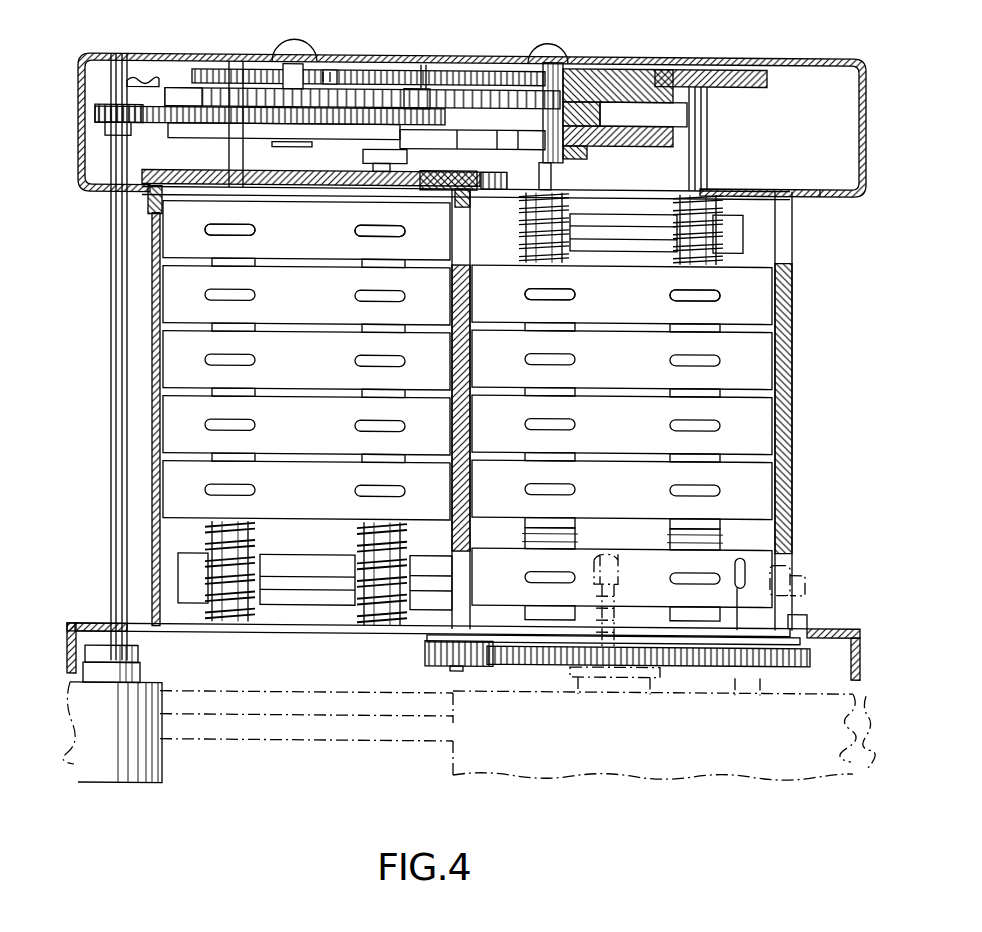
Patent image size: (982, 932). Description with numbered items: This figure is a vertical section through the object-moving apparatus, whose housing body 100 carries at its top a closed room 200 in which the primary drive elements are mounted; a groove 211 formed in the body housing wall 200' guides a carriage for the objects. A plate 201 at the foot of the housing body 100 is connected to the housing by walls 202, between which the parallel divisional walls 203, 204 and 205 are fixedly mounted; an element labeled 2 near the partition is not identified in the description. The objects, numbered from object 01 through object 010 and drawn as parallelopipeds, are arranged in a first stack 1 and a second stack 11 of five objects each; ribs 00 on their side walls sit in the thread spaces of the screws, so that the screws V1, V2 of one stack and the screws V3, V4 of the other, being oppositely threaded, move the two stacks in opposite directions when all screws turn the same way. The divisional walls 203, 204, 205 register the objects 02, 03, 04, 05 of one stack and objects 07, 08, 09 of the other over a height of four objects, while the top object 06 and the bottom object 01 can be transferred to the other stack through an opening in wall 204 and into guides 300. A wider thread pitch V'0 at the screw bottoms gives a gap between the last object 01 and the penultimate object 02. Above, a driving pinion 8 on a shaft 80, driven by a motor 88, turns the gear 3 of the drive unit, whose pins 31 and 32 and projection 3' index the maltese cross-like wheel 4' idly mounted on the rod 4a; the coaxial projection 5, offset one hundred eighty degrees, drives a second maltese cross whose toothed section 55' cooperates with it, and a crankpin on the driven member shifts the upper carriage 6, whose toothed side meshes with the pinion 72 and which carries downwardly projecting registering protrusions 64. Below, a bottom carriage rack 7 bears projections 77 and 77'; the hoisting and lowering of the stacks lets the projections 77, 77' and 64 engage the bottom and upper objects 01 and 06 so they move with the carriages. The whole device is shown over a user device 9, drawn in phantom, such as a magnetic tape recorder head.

The first stack of objects 1 is at (328, 56).
The pin 31 is at (165, 92).
The projection 3' is at (362, 64).
The gear 3 is at (368, 53).
The pin 32 is at (423, 62).
The rod 4a is at (580, 56).
The maltese cross-like wheel 4' is at (625, 88).
The driving pinion 8 is at (104, 106).
The projection 5 is at (200, 136).
The toothed section 55' is at (339, 155).
The upper carriage 6 is at (296, 150).
The pinion 72 is at (509, 178).
The groove 211 is at (612, 186).
The closed room 200 is at (472, 125).
The body housing wall 200' is at (811, 171).
The registering protrusions 64 is at (148, 203).
The divisional wall 203 is at (150, 254).
The divisional wall 204 is at (470, 302).
The divisional wall 205 is at (788, 283).
The frame 2 is at (466, 361).
The ribs 00 is at (244, 224).
The object 06 is at (448, 222).
The object 07 is at (448, 290).
The object 08 is at (448, 355).
The object 09 is at (448, 420).
The object 010 is at (448, 485).
The object 05 is at (510, 286).
The object 04 is at (510, 351).
The object 03 is at (510, 416).
The penultimate object 02 is at (510, 481).
The last object 01 is at (510, 569).
The guides 300 is at (717, 224).
The housing body 100 is at (806, 230).
The screw V3 is at (560, 250).
The screw V4 is at (722, 250).
The second stack of objects 11 is at (648, 250).
The walls 202 is at (328, 541).
The wider thread pitch V'0 is at (303, 539).
The screw V1 is at (228, 620).
The screw V2 is at (384, 622).
The projection 77' is at (429, 612).
The projection 77 is at (808, 573).
The shaft 80 is at (118, 392).
The user device 9 is at (666, 740).
The motor 88 is at (140, 758).
The plate 201 is at (830, 622).
The bottom carriage rack 7 is at (812, 652).